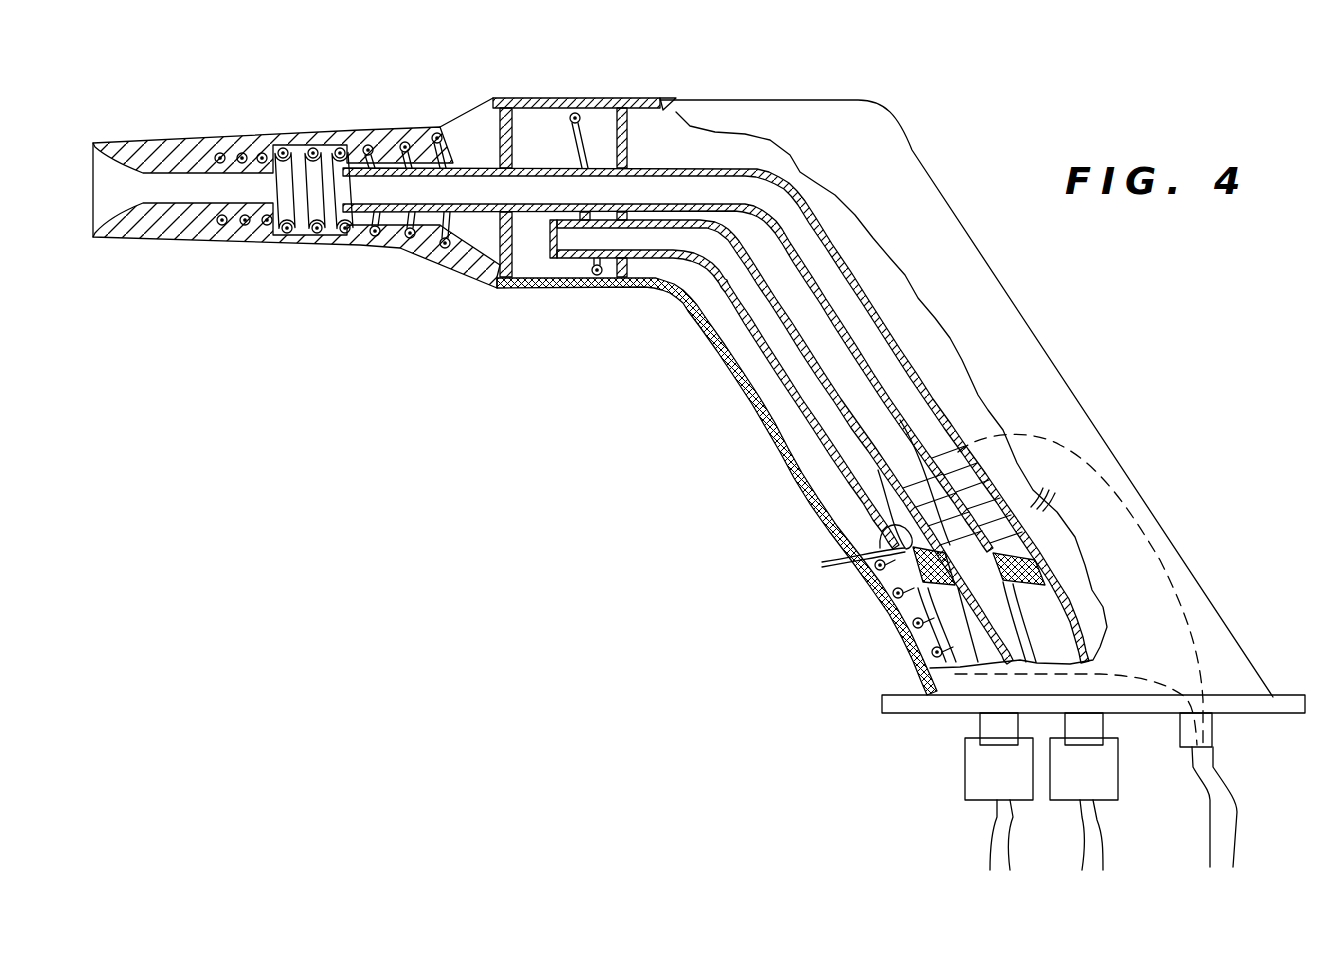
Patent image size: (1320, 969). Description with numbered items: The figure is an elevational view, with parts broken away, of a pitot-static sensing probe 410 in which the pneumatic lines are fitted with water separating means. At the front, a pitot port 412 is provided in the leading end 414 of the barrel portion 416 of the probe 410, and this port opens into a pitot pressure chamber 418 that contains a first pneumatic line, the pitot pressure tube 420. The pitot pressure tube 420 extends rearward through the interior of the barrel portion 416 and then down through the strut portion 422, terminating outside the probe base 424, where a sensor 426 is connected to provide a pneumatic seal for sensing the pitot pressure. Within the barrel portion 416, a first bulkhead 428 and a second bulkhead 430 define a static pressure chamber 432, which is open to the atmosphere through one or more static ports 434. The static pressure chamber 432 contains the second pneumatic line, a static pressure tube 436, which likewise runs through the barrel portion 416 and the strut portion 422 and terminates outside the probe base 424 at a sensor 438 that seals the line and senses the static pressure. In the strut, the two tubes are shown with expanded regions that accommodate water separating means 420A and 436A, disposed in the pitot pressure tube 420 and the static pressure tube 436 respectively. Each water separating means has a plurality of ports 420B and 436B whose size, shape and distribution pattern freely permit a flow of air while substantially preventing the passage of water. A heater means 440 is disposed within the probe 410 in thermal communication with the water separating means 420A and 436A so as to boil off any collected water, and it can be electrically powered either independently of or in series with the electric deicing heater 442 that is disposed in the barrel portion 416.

The pitot-static sensing probe 410 is at (772, 450).
The pitot port 412 is at (104, 193).
The leading end 414 is at (96, 150).
The barrel portion 416 is at (207, 245).
The pitot pressure chamber 418 is at (327, 147).
The pitot pressure tube 420 is at (461, 165).
The water separating means 420A is at (1040, 547).
The ports 420B is at (1068, 488).
The strut portion 422 is at (805, 503).
The probe base 424 is at (898, 712).
The sensor 426 is at (1118, 785).
The first bulkhead 428 is at (510, 133).
The second bulkhead 430 is at (627, 130).
The static pressure chamber 432 is at (557, 127).
The static ports 434 is at (553, 284).
The static pressure tube 436 is at (673, 262).
The water separating means 436A is at (895, 578).
The ports 436B is at (832, 553).
The sensor 438 is at (960, 790).
The heater means 440 is at (905, 620).
The electric deicing heater 442 is at (447, 257).